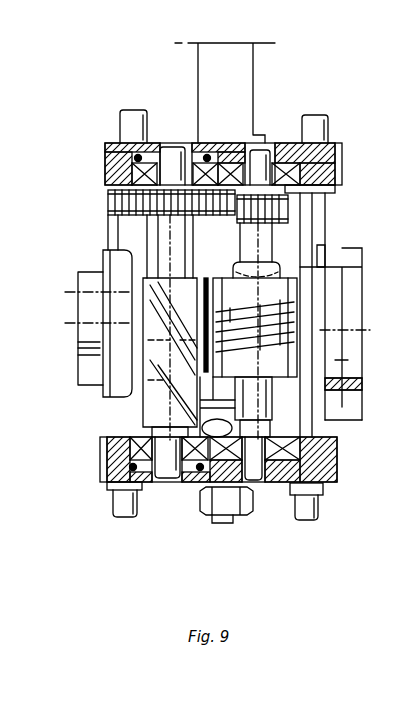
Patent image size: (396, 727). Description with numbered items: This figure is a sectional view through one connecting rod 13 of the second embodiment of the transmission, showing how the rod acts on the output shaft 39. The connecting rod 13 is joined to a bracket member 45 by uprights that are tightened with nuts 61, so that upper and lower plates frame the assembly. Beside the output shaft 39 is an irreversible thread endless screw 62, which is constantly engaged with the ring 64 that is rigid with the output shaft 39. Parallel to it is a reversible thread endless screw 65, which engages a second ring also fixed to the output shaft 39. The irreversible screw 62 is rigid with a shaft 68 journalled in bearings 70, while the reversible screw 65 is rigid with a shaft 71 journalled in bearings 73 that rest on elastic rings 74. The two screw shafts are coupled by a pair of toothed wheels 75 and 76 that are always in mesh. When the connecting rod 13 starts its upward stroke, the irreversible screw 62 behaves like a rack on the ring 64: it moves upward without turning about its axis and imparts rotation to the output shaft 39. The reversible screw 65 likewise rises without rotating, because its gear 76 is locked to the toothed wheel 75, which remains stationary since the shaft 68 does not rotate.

The connecting rod 13 is at (217, 65).
The output shaft 39 is at (90, 298).
The bracket member 45 is at (330, 493).
The nut 61 is at (220, 495).
The irreversible thread endless screw 62 is at (300, 266).
The ring 64 is at (272, 377).
The reversible thread endless screw 65 is at (163, 402).
The shaft 68 is at (252, 400).
The bearing 70 is at (288, 143).
The shaft 71 is at (172, 236).
The bearing 73 is at (138, 173).
The elastic ring 74 is at (119, 143).
The toothed wheel 75 is at (290, 208).
The toothed wheel 76 is at (123, 202).